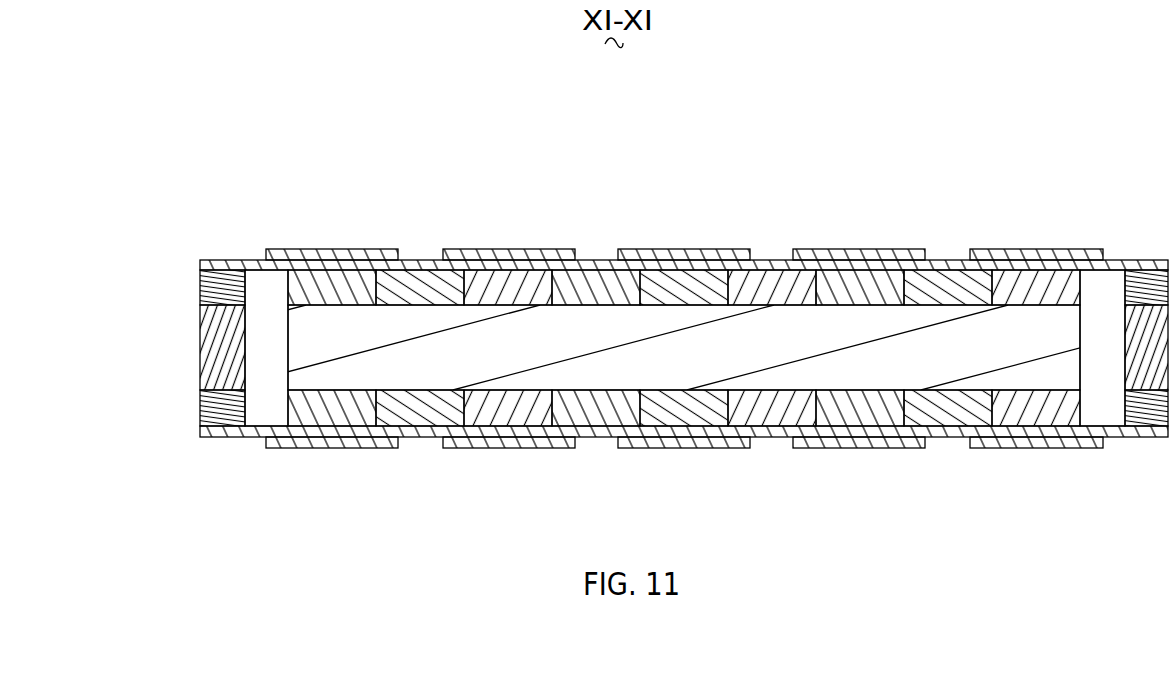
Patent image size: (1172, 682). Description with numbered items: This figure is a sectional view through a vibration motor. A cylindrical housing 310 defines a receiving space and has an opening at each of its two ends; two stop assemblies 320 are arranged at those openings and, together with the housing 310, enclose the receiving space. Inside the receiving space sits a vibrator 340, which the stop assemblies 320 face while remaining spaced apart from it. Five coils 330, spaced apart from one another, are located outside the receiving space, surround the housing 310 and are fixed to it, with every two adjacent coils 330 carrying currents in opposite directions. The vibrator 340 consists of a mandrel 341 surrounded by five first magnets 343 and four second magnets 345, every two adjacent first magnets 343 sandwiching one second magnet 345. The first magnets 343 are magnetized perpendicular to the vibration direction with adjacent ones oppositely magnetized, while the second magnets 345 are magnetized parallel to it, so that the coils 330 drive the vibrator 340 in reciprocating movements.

The housing 310 is at (585, 430).
The stop assembly 320 is at (210, 341).
The coil 330 is at (497, 440).
The vibrator 340 is at (586, 423).
The mandrel 341 is at (312, 372).
The first magnet 343 is at (358, 403).
The second magnet 345 is at (684, 398).